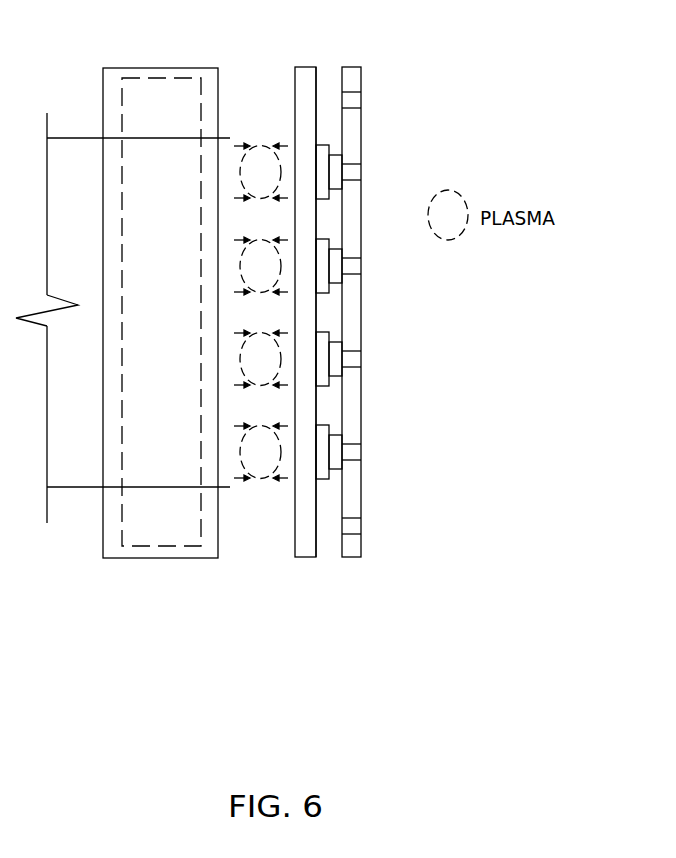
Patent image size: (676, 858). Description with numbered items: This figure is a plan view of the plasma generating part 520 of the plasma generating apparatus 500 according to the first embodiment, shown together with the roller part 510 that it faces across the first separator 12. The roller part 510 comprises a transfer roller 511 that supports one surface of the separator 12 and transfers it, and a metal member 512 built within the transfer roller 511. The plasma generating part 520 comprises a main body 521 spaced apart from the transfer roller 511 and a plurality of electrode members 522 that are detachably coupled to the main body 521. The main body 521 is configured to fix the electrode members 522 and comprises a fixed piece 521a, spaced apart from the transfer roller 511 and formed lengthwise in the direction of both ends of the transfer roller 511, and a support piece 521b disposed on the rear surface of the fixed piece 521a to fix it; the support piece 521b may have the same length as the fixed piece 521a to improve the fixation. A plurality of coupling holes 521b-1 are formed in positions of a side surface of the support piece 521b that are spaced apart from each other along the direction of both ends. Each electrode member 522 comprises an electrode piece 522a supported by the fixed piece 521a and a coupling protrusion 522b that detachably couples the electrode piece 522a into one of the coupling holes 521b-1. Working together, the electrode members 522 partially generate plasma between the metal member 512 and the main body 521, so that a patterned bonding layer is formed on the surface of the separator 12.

The first separator 12 is at (80, 488).
The plasma generating apparatus 500 is at (413, 72).
The roller part 510 is at (157, 378).
The transfer roller 511 is at (176, 560).
The metal member 512 is at (211, 640).
The plasma generating part 520 is at (428, 341).
The main body 521 is at (401, 341).
The fixed piece 521a is at (305, 558).
The support piece 521b is at (355, 560).
The coupling holes 521b-1 is at (348, 445).
The electrode members 522 is at (411, 312).
The electrode piece 522a is at (322, 480).
The coupling protrusion 522b is at (350, 463).